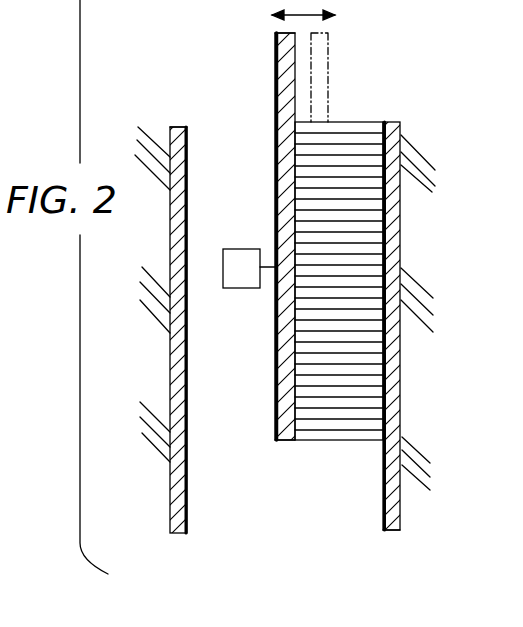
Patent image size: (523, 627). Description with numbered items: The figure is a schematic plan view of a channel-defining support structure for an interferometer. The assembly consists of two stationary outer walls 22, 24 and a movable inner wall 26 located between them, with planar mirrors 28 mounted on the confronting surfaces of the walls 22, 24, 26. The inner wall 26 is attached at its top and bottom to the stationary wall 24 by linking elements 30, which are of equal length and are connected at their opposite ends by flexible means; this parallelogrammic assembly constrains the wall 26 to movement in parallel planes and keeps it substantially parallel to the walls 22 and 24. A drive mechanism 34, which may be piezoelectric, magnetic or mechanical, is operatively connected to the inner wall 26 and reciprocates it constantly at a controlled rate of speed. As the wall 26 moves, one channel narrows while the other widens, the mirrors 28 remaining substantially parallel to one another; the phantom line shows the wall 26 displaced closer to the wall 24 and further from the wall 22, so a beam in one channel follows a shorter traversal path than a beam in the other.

The stationary outer wall 22 is at (178, 507).
The stationary outer wall 24 is at (395, 512).
The movable inner wall 26 is at (331, 97).
The planar mirrors 28 is at (293, 65).
The linking elements 30 is at (352, 167).
The drive mechanism 34 is at (240, 262).